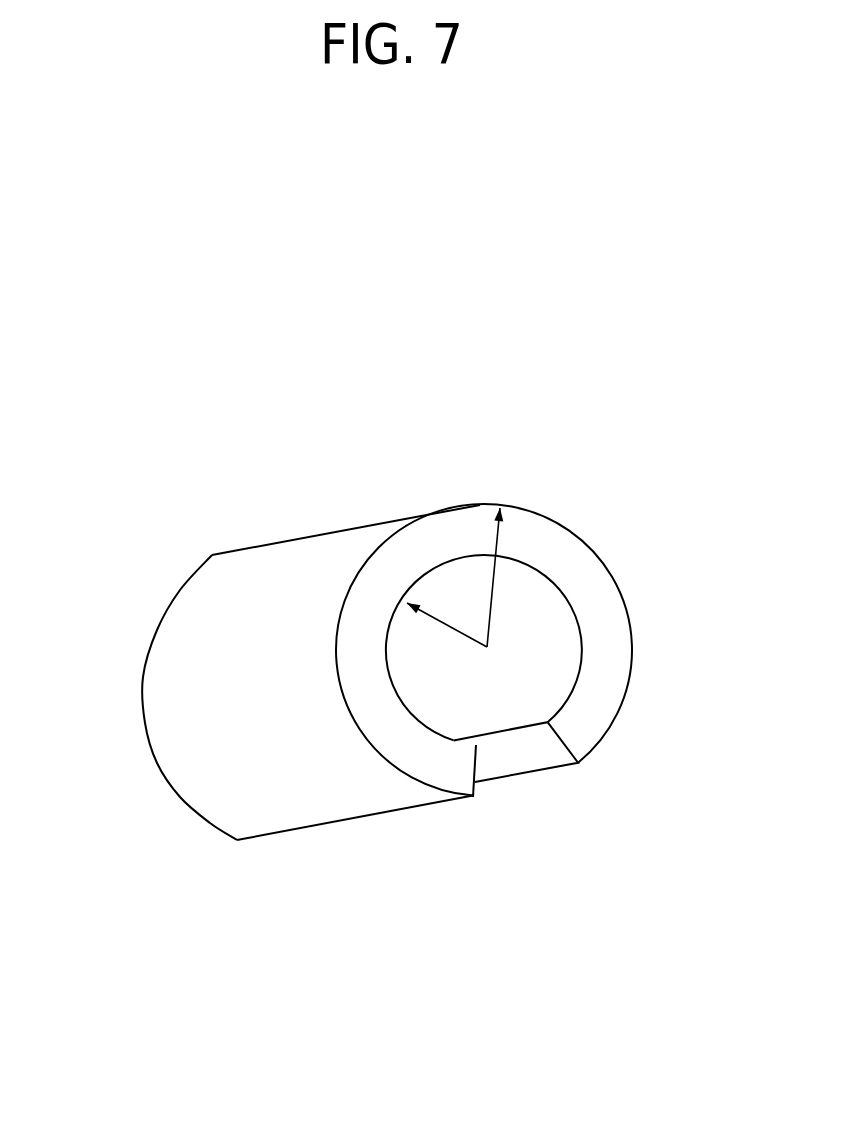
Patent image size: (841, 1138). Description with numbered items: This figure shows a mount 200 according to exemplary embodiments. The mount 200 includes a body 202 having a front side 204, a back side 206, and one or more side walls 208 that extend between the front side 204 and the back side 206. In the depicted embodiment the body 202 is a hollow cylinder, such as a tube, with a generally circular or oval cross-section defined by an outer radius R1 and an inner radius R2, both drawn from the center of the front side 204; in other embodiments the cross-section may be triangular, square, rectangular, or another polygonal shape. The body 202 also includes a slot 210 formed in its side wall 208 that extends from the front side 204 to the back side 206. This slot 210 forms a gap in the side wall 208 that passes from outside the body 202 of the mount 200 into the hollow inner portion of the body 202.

The mount 200 is at (373, 605).
The body 202 is at (371, 497).
The front side 204 is at (587, 580).
The back side 206 is at (143, 655).
The side wall 208 is at (295, 588).
The slot 210 is at (521, 797).
The outer radius R1 is at (510, 577).
The inner radius R2 is at (447, 630).